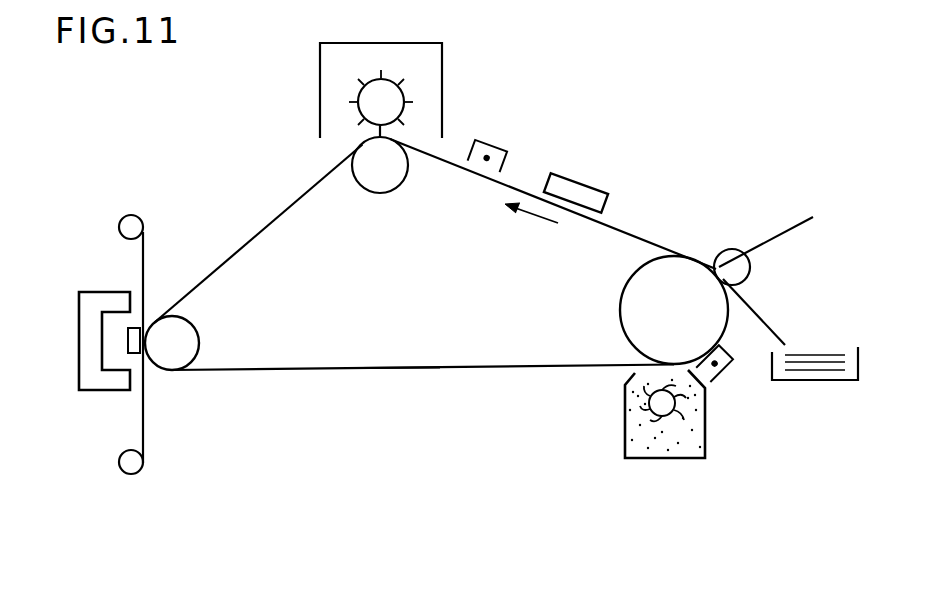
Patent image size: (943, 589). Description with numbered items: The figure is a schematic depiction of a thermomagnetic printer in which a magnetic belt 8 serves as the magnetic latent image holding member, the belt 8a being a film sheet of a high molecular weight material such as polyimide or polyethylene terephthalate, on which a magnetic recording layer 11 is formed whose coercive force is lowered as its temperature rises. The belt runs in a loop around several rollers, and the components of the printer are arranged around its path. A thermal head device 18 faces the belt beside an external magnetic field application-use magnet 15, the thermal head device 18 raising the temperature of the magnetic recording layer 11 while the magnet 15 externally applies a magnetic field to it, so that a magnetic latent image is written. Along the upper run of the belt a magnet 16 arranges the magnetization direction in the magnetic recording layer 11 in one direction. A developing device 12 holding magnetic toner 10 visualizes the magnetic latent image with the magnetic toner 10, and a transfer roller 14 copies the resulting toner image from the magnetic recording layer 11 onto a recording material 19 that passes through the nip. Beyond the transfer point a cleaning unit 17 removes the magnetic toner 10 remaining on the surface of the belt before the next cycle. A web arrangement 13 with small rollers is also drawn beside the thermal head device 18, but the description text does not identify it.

The magnetic belt 8 is at (499, 373).
The belt 8a is at (400, 367).
The magnetic toner 10 is at (653, 438).
The magnetic recording layer 11 is at (335, 370).
The developing device 12 is at (705, 440).
The cleaning web 13 is at (142, 253).
The transfer roller 14 is at (732, 265).
The external magnetic field application-use magnet 15 is at (83, 332).
The magnet 16 is at (575, 192).
The cleaning unit 17 is at (428, 68).
The thermal head device 18 is at (133, 353).
The recording material 19 is at (792, 228).